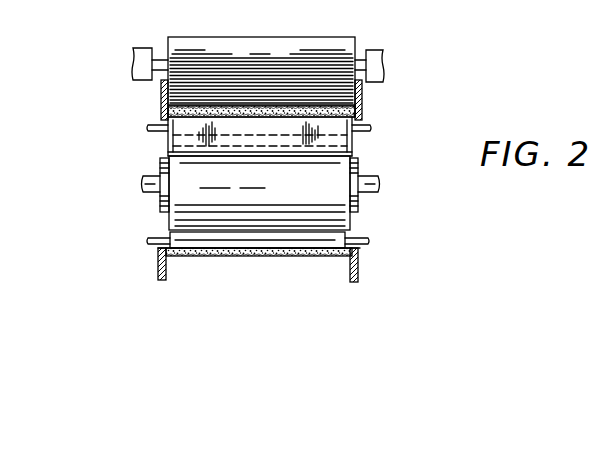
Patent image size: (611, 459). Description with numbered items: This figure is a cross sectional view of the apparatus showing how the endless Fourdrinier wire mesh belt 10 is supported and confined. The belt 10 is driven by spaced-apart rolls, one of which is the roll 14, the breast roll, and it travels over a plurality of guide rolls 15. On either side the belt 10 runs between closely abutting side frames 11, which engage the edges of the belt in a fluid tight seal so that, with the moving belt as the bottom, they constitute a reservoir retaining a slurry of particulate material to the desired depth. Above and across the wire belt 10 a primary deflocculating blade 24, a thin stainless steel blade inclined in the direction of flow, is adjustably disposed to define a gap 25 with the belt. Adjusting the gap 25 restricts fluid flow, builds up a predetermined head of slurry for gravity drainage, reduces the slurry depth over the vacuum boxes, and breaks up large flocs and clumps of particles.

The primary deflocculating blade 24 is at (276, 43).
The gap 25 is at (160, 107).
The side frames 11 is at (160, 115).
The endless Fourdrinier wire mesh belt 10 is at (345, 111).
The guide rolls 15 is at (326, 138).
The roll 14 is at (272, 191).